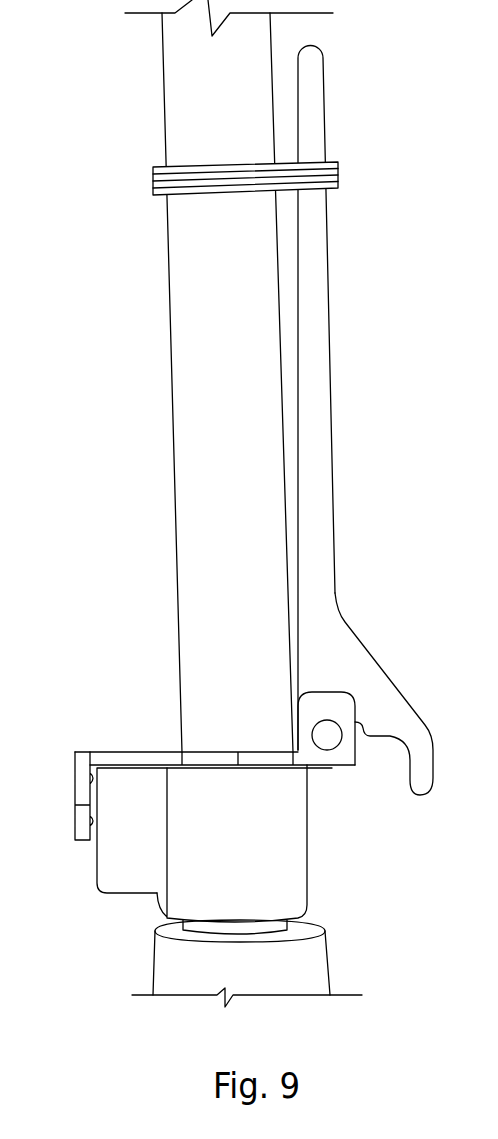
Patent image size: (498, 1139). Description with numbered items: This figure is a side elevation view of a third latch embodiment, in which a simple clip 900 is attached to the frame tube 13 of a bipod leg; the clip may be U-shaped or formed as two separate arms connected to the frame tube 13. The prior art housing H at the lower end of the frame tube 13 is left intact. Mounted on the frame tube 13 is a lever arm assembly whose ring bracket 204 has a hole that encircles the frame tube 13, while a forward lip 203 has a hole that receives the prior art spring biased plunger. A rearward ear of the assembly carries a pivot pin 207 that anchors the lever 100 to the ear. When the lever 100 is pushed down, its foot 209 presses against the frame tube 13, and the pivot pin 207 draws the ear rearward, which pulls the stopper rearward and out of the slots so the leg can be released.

The frame tube 13 is at (182, 340).
The lever 100 is at (318, 398).
The clip 900 is at (338, 178).
The forward lip 203 is at (82, 766).
The ring bracket 204 is at (152, 750).
The pivot pin 207 is at (329, 732).
The foot 209 is at (417, 772).
The housing H is at (120, 880).